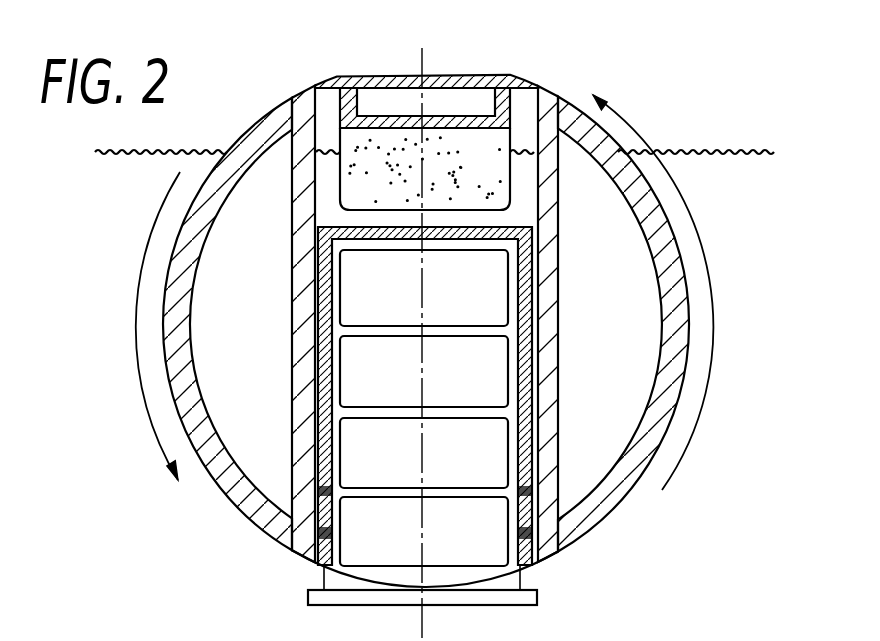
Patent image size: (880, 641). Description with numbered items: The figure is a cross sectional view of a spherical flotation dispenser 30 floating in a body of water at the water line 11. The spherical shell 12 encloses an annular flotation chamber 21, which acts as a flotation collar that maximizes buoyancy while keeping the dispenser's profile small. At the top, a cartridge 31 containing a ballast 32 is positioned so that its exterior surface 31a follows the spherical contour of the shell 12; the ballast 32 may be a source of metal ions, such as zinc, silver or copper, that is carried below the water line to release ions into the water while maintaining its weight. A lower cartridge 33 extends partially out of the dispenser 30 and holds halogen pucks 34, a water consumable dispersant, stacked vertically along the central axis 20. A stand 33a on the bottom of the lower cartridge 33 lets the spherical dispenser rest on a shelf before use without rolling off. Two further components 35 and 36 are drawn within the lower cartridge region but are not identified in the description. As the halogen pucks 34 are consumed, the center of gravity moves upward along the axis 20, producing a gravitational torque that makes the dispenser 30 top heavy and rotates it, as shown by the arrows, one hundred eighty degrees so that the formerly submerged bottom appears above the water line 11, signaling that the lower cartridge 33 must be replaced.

The water line 11 is at (710, 147).
The shell 12 is at (690, 288).
The axis 20 is at (420, 70).
The annular flotation chamber 21 is at (618, 336).
The flotation dispenser 30 is at (655, 85).
The cartridge 31 is at (463, 74).
The exterior surface 31a is at (377, 74).
The ballast 32 is at (475, 157).
The lower cartridge 33 is at (538, 414).
The stand 33a is at (490, 606).
The halogen pucks 34 is at (380, 533).
The inner container 35 is at (532, 533).
The spacers 36 is at (525, 530).